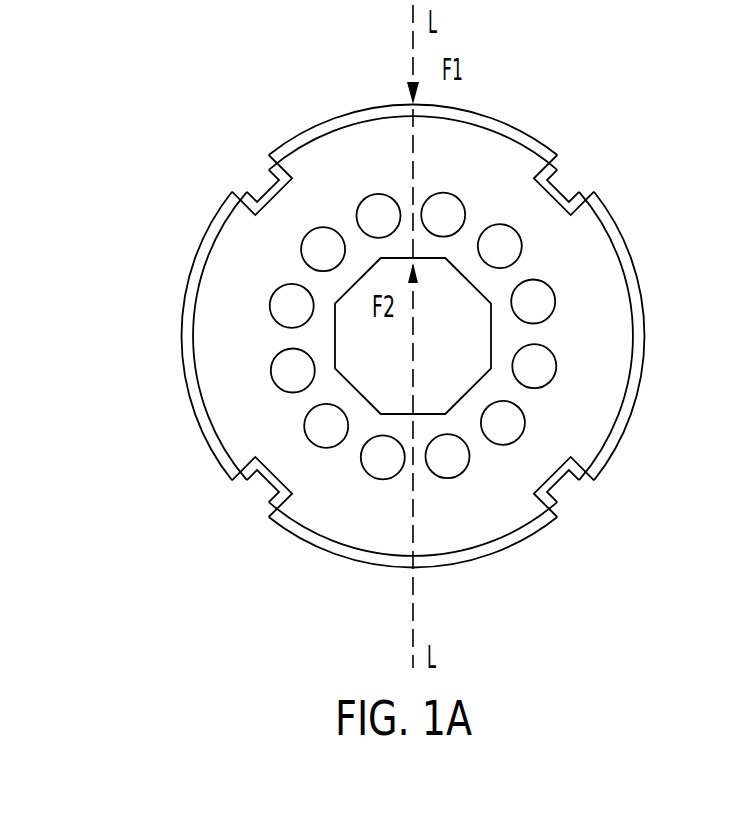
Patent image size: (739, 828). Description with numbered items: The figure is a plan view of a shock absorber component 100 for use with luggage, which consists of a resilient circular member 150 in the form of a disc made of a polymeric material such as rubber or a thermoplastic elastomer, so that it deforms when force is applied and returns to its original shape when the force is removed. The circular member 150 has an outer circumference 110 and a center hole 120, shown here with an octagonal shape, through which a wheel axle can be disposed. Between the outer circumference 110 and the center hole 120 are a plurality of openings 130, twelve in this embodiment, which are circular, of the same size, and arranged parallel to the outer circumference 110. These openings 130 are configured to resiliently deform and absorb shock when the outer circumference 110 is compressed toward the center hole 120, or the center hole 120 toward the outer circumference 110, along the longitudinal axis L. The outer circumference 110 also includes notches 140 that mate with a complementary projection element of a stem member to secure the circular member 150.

The shock absorber component 100 is at (218, 100).
The outer circumference 110 is at (181, 328).
The center hole 120 is at (366, 351).
The openings 130 is at (383, 462).
The notches 140 is at (253, 175).
The resilient circular member 150 is at (367, 272).